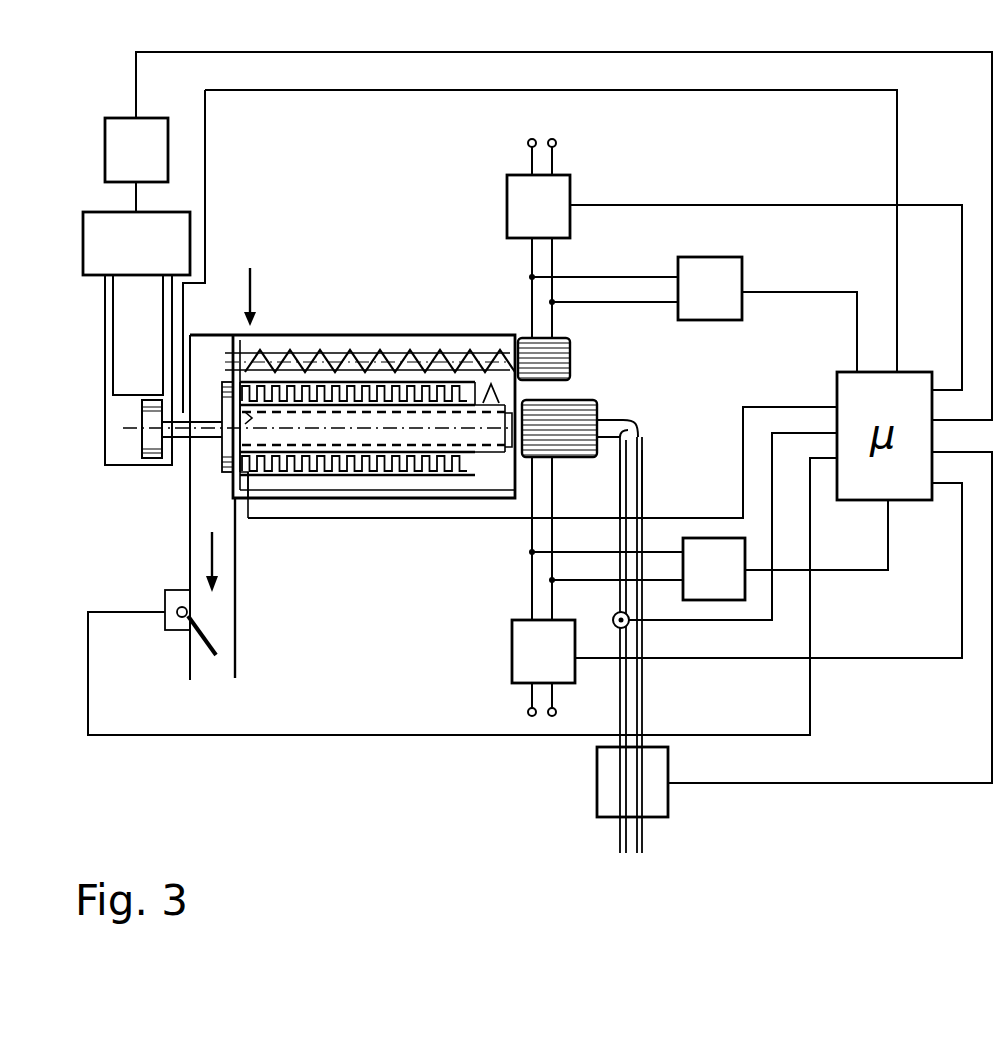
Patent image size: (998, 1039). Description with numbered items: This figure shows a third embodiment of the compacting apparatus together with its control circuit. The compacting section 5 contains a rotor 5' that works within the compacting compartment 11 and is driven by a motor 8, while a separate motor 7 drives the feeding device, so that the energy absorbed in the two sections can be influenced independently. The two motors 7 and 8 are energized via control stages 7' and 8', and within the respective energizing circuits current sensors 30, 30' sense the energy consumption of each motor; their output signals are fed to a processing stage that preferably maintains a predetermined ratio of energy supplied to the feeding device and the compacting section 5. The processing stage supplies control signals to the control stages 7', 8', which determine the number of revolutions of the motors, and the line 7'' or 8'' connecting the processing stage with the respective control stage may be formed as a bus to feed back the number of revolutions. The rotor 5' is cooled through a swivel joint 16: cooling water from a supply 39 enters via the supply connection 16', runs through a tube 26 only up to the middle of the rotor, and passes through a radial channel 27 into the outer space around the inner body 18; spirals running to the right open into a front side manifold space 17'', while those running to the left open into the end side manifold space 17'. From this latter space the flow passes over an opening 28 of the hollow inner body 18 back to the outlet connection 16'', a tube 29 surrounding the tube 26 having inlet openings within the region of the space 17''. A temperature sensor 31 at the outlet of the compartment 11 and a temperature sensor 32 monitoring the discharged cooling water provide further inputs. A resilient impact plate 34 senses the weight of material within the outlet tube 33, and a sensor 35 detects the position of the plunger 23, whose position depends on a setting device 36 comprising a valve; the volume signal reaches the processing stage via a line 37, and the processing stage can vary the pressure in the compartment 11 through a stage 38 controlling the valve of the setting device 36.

The compacting section 5 is at (352, 463).
The rotor 5' is at (279, 519).
The motor 7 is at (566, 345).
The control stage 7' is at (538, 188).
The line 7'' is at (766, 297).
The motor 8 is at (577, 406).
The control stage 8' is at (543, 651).
The line 8'' is at (768, 570).
The compacting compartment 11 is at (480, 466).
The swivel joint 16 is at (651, 598).
The supply connection 16' is at (656, 435).
The outlet connection 16'' is at (607, 485).
The end side manifold space 17' is at (274, 338).
The front side manifold space 17'' is at (505, 326).
The inner body 18 is at (470, 417).
The plunger 23 is at (140, 440).
The tube 26 is at (406, 432).
The radial channel 27 is at (372, 427).
The opening 28 is at (230, 435).
The tube 29 is at (510, 455).
The current sensor 30 is at (710, 288).
The current sensor 30' is at (714, 569).
The temperature sensor 31 is at (243, 474).
The temperature sensor 32 is at (613, 614).
The outlet tube 33 is at (240, 667).
The resilient impact plate 34 is at (210, 657).
The sensor 35 is at (183, 412).
The setting device 36 is at (152, 258).
The line 37 is at (758, 97).
The stage 38 is at (152, 165).
The supply 39 is at (649, 796).